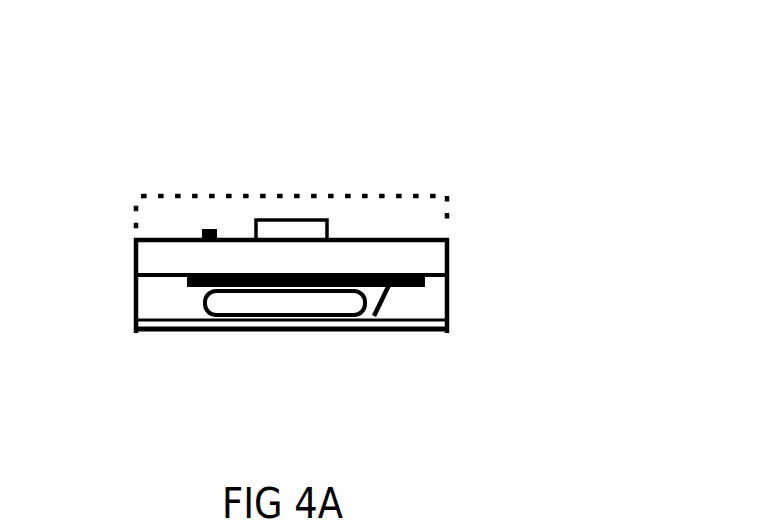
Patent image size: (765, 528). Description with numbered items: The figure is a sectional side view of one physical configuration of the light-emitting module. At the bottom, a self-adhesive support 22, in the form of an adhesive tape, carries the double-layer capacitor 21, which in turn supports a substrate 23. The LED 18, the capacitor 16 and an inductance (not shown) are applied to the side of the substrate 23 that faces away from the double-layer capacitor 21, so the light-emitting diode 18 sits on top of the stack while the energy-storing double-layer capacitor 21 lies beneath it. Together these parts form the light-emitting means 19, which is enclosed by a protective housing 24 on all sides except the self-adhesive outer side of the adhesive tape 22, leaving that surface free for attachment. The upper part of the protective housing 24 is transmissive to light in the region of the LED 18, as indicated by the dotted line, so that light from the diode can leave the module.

The capacitor 16 is at (204, 231).
The LED 18 is at (305, 230).
The light-emitting means 19 is at (580, 127).
The double-layer capacitor 21 is at (285, 305).
The self-adhesive support 22 is at (131, 333).
The substrate 23 is at (160, 263).
The protective housing 24 is at (448, 210).